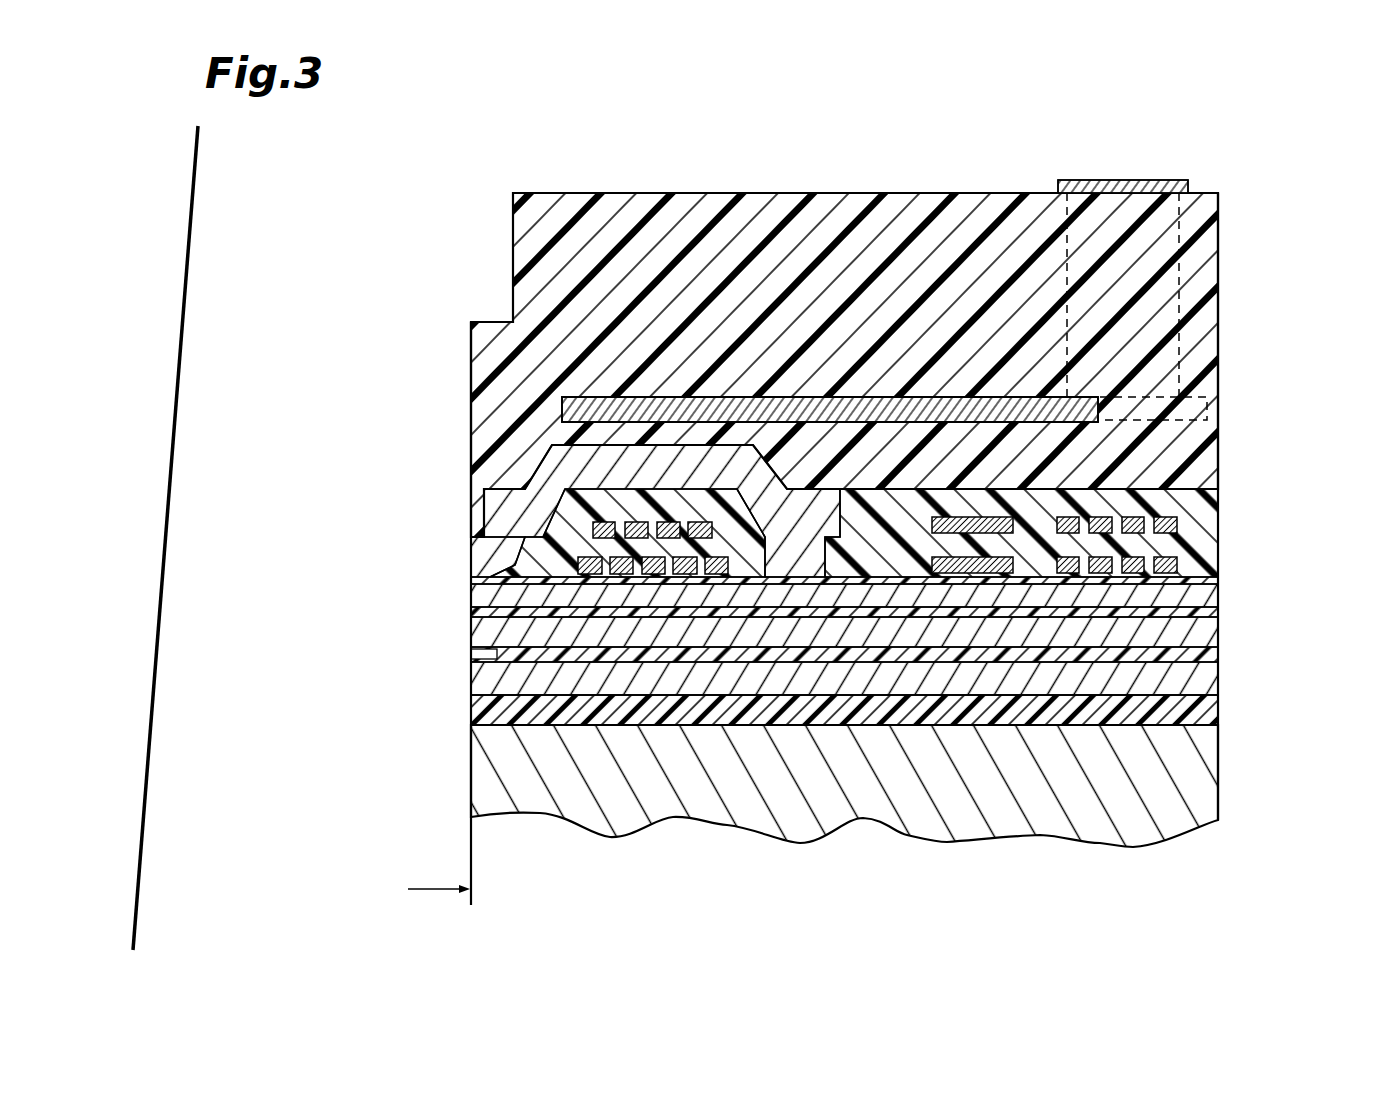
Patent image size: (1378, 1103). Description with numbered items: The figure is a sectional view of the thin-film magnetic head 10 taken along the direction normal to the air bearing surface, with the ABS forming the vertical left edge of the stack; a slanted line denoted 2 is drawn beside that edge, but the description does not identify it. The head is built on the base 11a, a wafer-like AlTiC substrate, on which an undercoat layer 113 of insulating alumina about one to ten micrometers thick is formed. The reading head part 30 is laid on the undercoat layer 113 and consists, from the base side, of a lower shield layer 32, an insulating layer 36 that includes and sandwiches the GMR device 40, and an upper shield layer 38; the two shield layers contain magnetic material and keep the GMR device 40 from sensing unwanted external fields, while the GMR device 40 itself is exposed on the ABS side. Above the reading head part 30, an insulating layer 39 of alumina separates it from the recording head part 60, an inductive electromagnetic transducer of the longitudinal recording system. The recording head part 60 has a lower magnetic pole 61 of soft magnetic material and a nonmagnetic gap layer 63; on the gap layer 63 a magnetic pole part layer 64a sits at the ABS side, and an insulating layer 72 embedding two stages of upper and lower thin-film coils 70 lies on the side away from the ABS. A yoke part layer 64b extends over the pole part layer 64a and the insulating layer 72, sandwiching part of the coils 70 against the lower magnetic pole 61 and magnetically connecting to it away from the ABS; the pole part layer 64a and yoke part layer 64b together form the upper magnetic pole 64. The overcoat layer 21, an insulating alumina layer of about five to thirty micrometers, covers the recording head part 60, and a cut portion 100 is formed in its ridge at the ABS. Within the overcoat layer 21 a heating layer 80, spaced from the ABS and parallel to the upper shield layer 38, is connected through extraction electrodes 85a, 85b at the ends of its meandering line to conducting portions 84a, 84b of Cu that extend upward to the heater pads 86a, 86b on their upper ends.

The magnetic recording medium 2 is at (196, 218).
The thin-film magnetic head 10 is at (326, 291).
The cut portion 100 is at (513, 258).
The overcoat layer 21 is at (1200, 290).
The heating layer 80 is at (1063, 422).
The conductive portion 84a is at (1202, 270).
The conductive portion 84b is at (1193, 233).
The extraction electrode 85a is at (1235, 394).
The extraction electrode 85b is at (1205, 408).
The heater pad 86a is at (1147, 153).
The heater pad 86b is at (1140, 180).
The recording head part 60 is at (787, 469).
The upper magnetic pole 64 is at (587, 511).
The magnetic pole part layer 64a is at (490, 558).
The yoke part layer 64b is at (497, 513).
The insulating layer 72 is at (607, 497).
The thin-film coils 70 is at (580, 560).
The gap layer 63 is at (470, 579).
The lower magnetic pole 61 is at (805, 598).
The insulating layer 39 is at (1213, 613).
The reading head part 30 is at (823, 697).
The upper shield layer 38 is at (478, 625).
The GMR device 40 is at (472, 655).
The insulating layer 36 is at (478, 672).
The lower shield layer 32 is at (816, 734).
The undercoat layer 113 is at (867, 734).
The base 11a is at (1206, 776).